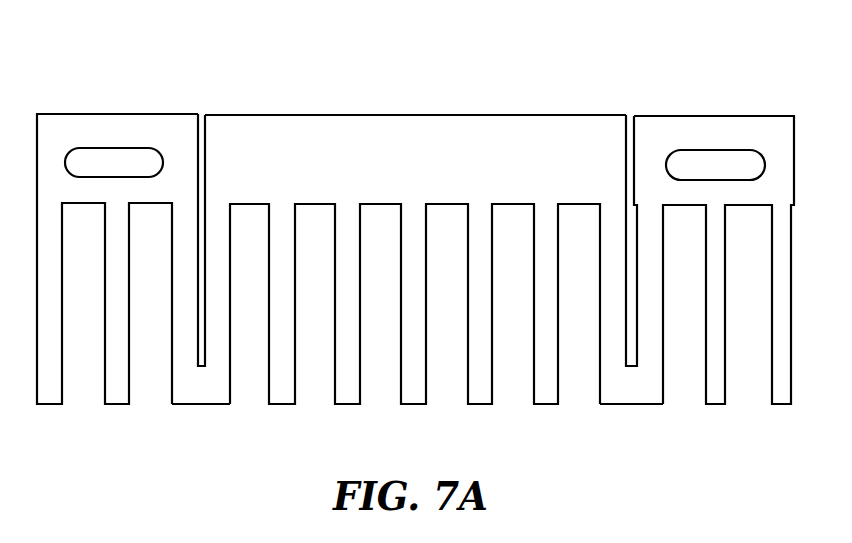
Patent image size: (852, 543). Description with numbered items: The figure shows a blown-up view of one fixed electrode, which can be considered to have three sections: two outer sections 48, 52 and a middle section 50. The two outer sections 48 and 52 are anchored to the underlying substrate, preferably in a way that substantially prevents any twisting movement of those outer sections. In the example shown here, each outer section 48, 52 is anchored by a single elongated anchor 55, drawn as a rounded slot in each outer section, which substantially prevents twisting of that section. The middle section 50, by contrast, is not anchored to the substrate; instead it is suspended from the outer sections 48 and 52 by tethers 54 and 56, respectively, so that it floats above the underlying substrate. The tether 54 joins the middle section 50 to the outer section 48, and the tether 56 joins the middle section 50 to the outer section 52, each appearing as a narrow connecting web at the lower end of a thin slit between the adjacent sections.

The outer section 48 is at (156, 113).
The middle section 50 is at (380, 114).
The outer section 52 is at (660, 115).
The tether 54 is at (202, 404).
The elongated anchor 55 is at (83, 157).
The tether 56 is at (632, 405).